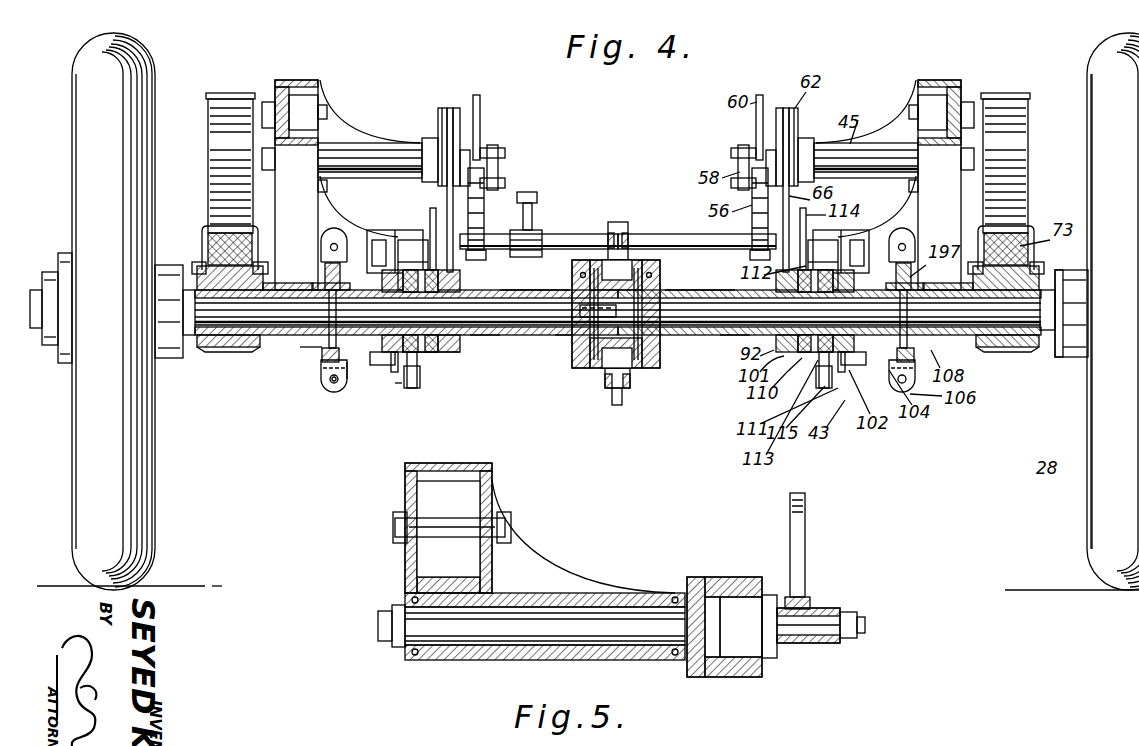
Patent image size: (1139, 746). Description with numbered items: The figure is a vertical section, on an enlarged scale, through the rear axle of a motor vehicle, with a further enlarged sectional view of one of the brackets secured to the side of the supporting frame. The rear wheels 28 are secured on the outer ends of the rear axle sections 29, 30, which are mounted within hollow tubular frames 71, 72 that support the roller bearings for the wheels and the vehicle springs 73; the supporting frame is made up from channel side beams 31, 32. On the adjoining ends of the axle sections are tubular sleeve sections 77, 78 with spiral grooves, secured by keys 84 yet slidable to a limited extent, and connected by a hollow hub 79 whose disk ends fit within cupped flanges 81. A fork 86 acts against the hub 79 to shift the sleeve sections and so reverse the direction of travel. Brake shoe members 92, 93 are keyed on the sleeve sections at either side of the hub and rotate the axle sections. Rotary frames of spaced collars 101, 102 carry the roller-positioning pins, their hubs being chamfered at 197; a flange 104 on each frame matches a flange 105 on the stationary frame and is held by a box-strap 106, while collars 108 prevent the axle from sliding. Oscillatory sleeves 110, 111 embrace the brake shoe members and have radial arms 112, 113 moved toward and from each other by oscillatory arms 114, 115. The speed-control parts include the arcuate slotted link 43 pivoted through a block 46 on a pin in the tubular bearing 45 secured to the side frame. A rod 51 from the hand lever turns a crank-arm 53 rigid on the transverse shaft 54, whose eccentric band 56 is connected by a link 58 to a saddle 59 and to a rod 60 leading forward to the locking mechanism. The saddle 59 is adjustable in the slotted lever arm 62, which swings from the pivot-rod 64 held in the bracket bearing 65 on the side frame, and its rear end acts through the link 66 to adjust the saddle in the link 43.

In FIG. 4, the rear wheels 28 is at (127, 311).
In FIG. 4, the rear axle section 29 is at (492, 340).
In FIG. 4, the rear axle section 30 is at (728, 340).
In FIG. 4, the channel side beam 31 is at (279, 80).
In FIG. 4, the channel side beam 32 is at (950, 82).
In FIG. 5, the channel side beam 32 is at (480, 462).
In FIG. 4, the oscillatory link 43 is at (393, 229).
In FIG. 4, the tubular bearing 45 is at (347, 132).
In FIG. 4, the block 46 is at (352, 224).
In FIG. 4, the rod 51 is at (538, 201).
In FIG. 4, the crank-arm 53 is at (535, 234).
In FIG. 4, the transverse shaft 54 is at (577, 238).
In FIG. 4, the eccentric band 56 is at (482, 200).
In FIG. 4, the link 58 is at (503, 172).
In FIG. 5, the link 58 is at (828, 645).
In FIG. 5, the saddle 59 is at (725, 627).
In FIG. 4, the rod 60 is at (481, 101).
In FIG. 5, the rod 60 is at (801, 583).
In FIG. 4, the lever arm 62 is at (443, 108).
In FIG. 5, the lever arm 62 is at (728, 577).
In FIG. 5, the pivot-rod 64 is at (596, 608).
In FIG. 5, the bracket bearing 65 is at (583, 536).
In FIG. 4, the link 66 is at (447, 197).
In FIG. 4, the hollow tubular frame 71 is at (294, 340).
In FIG. 4, the hollow tubular frame 72 is at (962, 345).
In FIG. 4, the vehicle springs 73 is at (216, 246).
In FIG. 4, the tubular sleeve section 77 is at (548, 294).
In FIG. 4, the tubular sleeve section 78 is at (712, 294).
In FIG. 4, the hub 79 is at (571, 344).
In FIG. 4, the cupped flanges 81 is at (572, 270).
In FIG. 4, the keys 84 is at (513, 312).
In FIG. 4, the fork 86 is at (626, 234).
In FIG. 4, the brake shoe member 92 is at (462, 350).
In FIG. 4, the brake shoe member 93 is at (618, 311).
In FIG. 4, the collar 101 is at (452, 356).
In FIG. 4, the collar 102 is at (392, 372).
In FIG. 4, the flange 104 is at (349, 370).
In FIG. 4, the flange 105 is at (322, 383).
In FIG. 4, the box-strap 106 is at (328, 394).
In FIG. 4, the collar 108 is at (305, 350).
In FIG. 4, the oscillatory sleeve 110 is at (436, 358).
In FIG. 4, the oscillatory sleeve 111 is at (398, 388).
In FIG. 4, the arm 112 is at (430, 266).
In FIG. 4, the arm 113 is at (420, 360).
In FIG. 4, the oscillatory arm 114 is at (430, 215).
In FIG. 4, the oscillatory arm 115 is at (412, 390).
In FIG. 4, the chamfer 197 is at (326, 277).